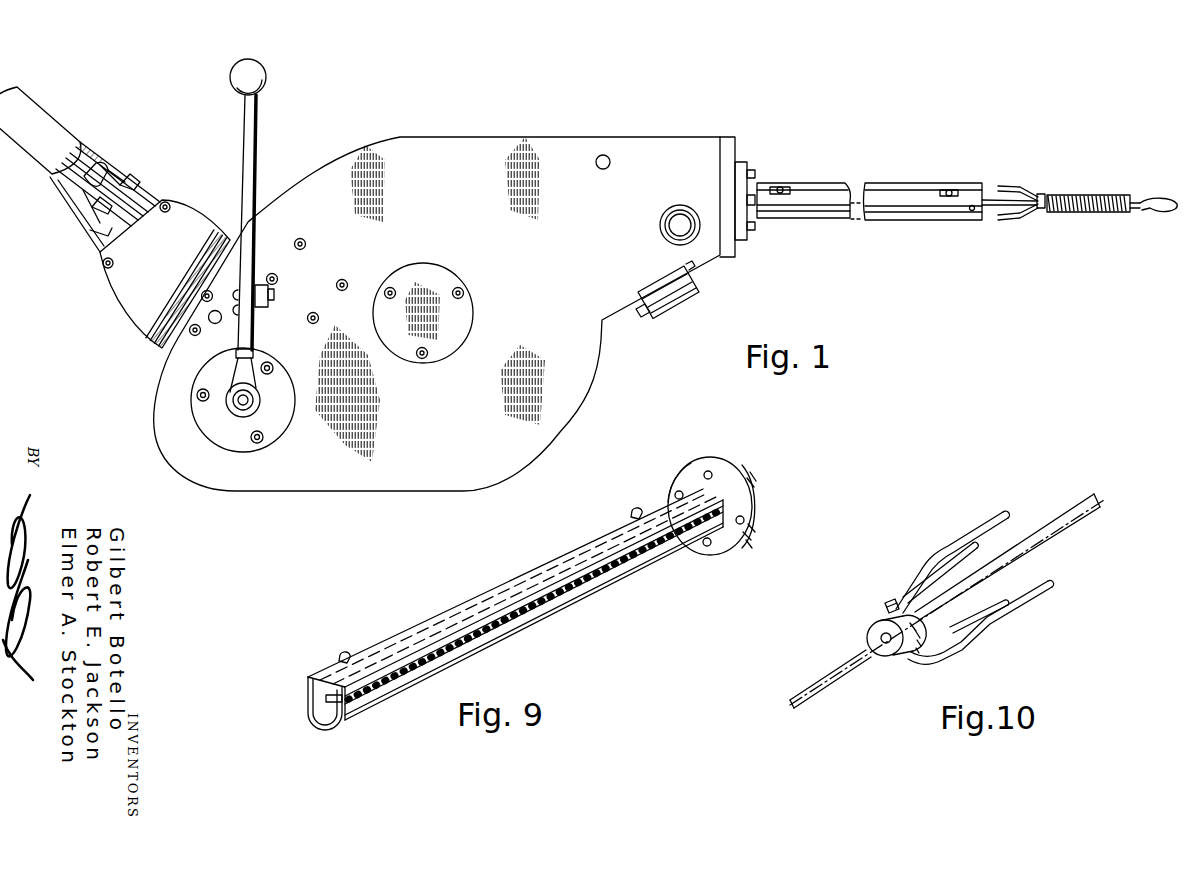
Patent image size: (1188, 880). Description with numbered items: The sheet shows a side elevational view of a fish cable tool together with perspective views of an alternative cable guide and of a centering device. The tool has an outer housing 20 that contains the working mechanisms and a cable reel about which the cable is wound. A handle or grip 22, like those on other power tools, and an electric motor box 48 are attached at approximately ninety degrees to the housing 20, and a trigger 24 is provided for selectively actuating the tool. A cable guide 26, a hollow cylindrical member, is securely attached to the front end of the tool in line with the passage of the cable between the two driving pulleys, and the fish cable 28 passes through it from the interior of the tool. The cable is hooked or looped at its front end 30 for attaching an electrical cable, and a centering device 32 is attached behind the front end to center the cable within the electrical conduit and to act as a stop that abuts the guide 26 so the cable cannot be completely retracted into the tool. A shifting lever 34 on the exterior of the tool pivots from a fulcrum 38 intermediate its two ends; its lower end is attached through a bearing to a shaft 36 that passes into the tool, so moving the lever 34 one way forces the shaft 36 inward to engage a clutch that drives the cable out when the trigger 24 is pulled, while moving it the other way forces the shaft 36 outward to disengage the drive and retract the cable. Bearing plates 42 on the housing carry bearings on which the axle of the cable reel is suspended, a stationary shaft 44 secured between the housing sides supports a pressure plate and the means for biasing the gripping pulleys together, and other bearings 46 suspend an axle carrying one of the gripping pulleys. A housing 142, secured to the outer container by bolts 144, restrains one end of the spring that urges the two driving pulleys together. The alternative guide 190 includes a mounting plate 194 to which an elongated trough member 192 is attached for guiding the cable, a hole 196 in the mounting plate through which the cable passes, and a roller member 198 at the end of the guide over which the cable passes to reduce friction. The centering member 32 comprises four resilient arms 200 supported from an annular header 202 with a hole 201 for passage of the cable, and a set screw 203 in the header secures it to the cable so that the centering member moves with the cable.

In FIG. 1, the outer housing 20 is at (470, 137).
In FIG. 1, the handle or grip 22 is at (50, 113).
In FIG. 1, the trigger 24 is at (110, 198).
In FIG. 1, the cable guide 26 is at (915, 190).
In FIG. 1, the fish cable 28 is at (993, 200).
In FIG. 10, the fish cable 28 is at (1047, 530).
In FIG. 1, the front end 30 is at (1160, 200).
In FIG. 1, the centering device 32 is at (1042, 194).
In FIG. 10, the centering device 32 is at (924, 533).
In FIG. 1, the shifting lever 34 is at (253, 177).
In FIG. 1, the shaft 36 is at (256, 405).
In FIG. 1, the fulcrum 38 is at (268, 304).
In FIG. 1, the bearing plates 42 is at (448, 346).
In FIG. 1, the stationary shaft 44 is at (599, 169).
In FIG. 1, the bearings 46 is at (683, 180).
In FIG. 1, the electric motor box 48 is at (207, 183).
In FIG. 1, the housing 142 is at (684, 313).
In FIG. 1, the bolts 144 is at (641, 314).
In FIG. 9, the cable guide 190 is at (486, 577).
In FIG. 9, the elongated trough member 192 is at (308, 683).
In FIG. 9, the mounting plate 194 is at (688, 470).
In FIG. 9, the hole 196 is at (740, 458).
In FIG. 9, the roller member 198 is at (318, 720).
In FIG. 10, the resilient arms 200 is at (982, 524).
In FIG. 10, the hole 201 is at (886, 645).
In FIG. 10, the annular header 202 is at (872, 626).
In FIG. 10, the set screw 203 is at (888, 605).